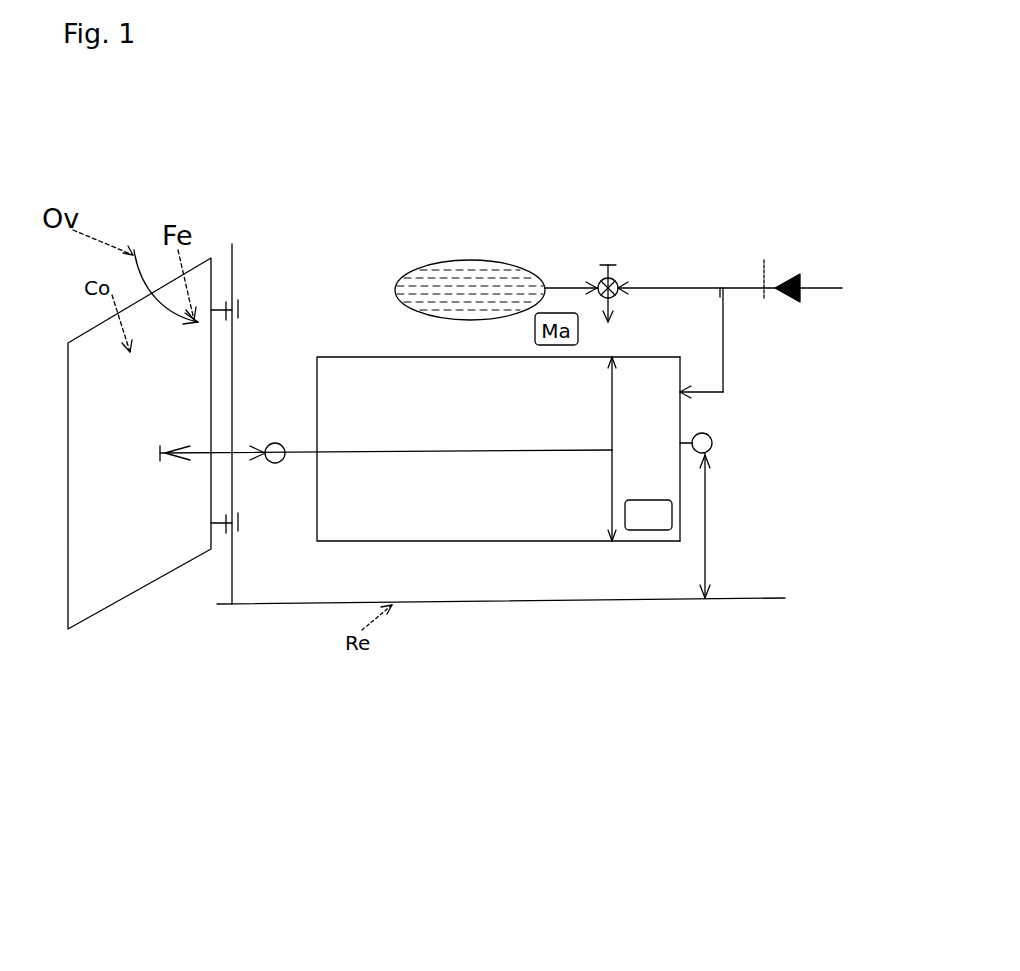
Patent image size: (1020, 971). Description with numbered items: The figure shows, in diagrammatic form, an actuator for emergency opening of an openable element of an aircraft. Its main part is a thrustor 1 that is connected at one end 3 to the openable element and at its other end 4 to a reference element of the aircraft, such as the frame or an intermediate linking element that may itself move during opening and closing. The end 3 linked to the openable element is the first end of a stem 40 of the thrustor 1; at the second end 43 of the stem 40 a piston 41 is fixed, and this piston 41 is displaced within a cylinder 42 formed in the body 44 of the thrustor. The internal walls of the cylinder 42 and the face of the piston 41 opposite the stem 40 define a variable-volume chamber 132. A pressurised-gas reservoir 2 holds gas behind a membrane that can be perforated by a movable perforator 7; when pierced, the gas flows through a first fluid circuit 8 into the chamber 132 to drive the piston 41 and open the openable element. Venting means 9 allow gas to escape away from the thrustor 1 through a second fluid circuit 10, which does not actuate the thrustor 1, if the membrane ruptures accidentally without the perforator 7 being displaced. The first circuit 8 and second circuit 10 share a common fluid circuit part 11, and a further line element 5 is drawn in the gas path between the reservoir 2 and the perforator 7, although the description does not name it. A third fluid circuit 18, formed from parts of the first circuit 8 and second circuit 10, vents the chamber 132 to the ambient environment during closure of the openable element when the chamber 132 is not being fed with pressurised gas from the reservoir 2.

The thrustor 1 is at (498, 465).
The pressurised-gas reservoir 2 is at (458, 257).
The first end of the stem 3 is at (276, 464).
The other end of the thrustor 4 is at (710, 437).
The pressure line 5 is at (677, 277).
The movable perforator 7 is at (822, 270).
The first fluid circuit 8 is at (727, 340).
The venting means 9 is at (608, 252).
The second fluid circuit 10 is at (617, 270).
The common fluid circuit part 11 is at (563, 273).
The third fluid circuit 18 is at (727, 377).
The stem 40 is at (343, 450).
The piston 41 is at (612, 508).
The cylinder 42 is at (450, 540).
The second end of the stem 43 is at (600, 433).
The body of the thrustor 44 is at (648, 542).
The variable-volume chamber 132 is at (648, 515).